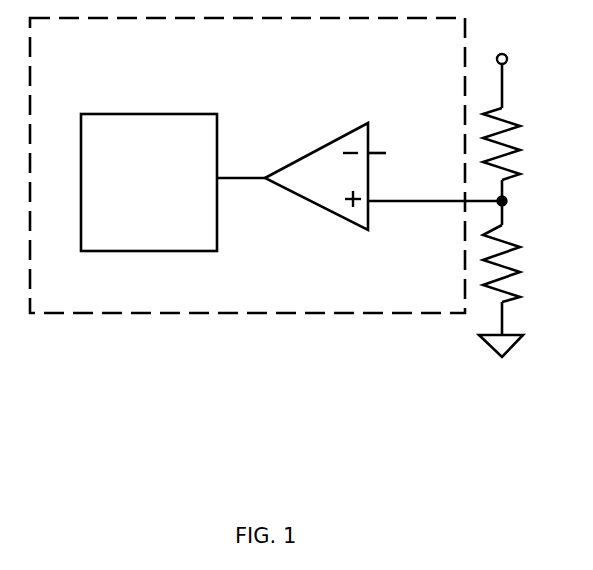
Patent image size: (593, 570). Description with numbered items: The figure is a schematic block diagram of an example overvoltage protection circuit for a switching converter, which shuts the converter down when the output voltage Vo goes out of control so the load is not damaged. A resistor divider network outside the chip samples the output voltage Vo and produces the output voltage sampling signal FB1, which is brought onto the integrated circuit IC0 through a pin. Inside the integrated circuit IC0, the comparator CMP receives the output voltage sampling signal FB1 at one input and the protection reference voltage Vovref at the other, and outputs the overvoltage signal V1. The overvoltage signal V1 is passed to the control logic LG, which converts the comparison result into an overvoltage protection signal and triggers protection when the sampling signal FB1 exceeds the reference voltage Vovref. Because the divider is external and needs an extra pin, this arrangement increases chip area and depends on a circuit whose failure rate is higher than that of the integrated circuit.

The integrated circuit IC0 is at (88, 48).
The control logic LG is at (139, 114).
The overvoltage signal V1 is at (241, 163).
The comparator CMP is at (316, 192).
The protection reference voltage Vovref is at (404, 139).
The output voltage sampling signal FB1 is at (437, 191).
The output voltage Vo is at (503, 63).